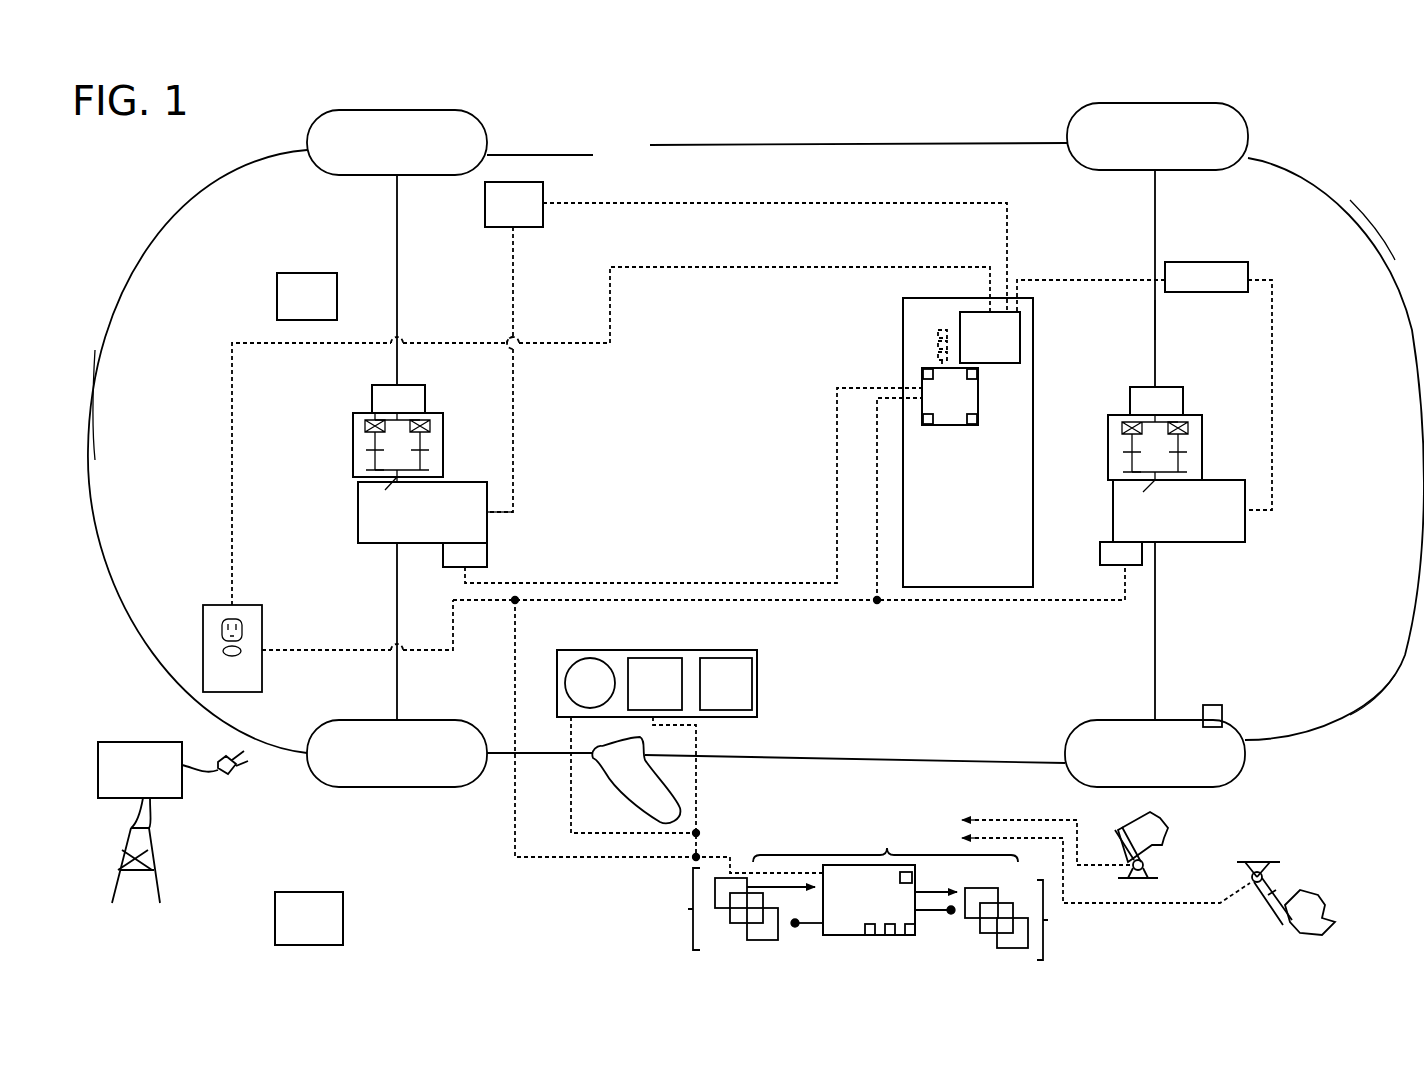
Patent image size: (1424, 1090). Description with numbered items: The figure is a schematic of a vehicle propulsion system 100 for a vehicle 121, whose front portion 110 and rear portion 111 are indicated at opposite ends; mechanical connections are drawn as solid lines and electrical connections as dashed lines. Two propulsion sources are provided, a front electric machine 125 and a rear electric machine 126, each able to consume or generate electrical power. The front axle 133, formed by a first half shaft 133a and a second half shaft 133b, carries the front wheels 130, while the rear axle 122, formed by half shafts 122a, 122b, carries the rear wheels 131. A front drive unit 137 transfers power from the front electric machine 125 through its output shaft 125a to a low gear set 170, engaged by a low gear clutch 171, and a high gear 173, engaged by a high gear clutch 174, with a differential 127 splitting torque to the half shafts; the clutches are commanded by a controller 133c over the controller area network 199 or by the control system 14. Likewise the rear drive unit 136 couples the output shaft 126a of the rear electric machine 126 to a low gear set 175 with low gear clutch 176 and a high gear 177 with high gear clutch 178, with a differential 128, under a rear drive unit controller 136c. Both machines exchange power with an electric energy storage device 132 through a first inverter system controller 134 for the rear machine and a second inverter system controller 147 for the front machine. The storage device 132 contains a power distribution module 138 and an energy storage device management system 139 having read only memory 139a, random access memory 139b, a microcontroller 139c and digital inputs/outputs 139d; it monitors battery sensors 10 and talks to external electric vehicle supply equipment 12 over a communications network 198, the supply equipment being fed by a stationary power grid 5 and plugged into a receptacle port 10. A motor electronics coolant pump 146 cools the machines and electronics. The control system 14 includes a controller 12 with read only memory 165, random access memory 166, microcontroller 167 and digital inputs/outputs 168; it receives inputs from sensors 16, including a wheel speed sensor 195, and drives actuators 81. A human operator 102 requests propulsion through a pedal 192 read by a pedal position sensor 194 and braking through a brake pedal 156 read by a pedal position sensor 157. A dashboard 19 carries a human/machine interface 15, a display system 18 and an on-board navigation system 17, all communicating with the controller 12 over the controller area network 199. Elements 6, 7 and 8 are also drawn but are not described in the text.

The vehicle propulsion system 100 is at (892, 118).
The front portion of vehicle 110 is at (100, 246).
The rear portion of vehicle 111 is at (1385, 190).
The vehicle 121 is at (1365, 742).
The rear axle 122 is at (1183, 247).
The first half shaft 122a is at (1155, 228).
The second half shaft 122b is at (1155, 648).
The front wheels 130 is at (412, 110).
The rear wheels 131 is at (1192, 103).
The front axle 133 is at (365, 578).
The first half shaft 133a is at (397, 285).
The second half shaft 133b is at (397, 608).
The front drive unit controller 133c is at (465, 555).
The first inverter system controller 134 is at (1206, 277).
The rear drive unit 136 is at (1280, 522).
The rear drive unit controller 136c is at (1121, 553).
The front drive unit 137 is at (520, 522).
The power distribution module 138 is at (990, 337).
The electric energy storage device management system 139 is at (950, 396).
The non-transitory memory 139a is at (930, 426).
The random access memory 139b is at (972, 426).
The microcontroller 139c is at (978, 378).
The digital inputs/outputs 139d is at (918, 373).
The motor electronics coolant pump 146 is at (307, 296).
The second inverter system controller 147 is at (514, 204).
The front electric machine 125 is at (422, 512).
The output shaft of front electric machine 125a is at (379, 489).
The rear electric machine 126 is at (1179, 511).
The output shaft of rear electric machine 126a is at (1136, 492).
The differential 127 is at (398, 399).
The differential 128 is at (1156, 401).
The electric energy storage device 132 is at (988, 496).
The receptacle port 10 is at (262, 672).
The communications network 198 is at (322, 650).
The controller area network 199 is at (540, 860).
The dashboard 19 is at (688, 650).
The human/machine interface 15 is at (602, 694).
The display system 18 is at (667, 694).
The on-board navigation system 17 is at (738, 694).
The controller 12 is at (128, 783).
The stationary power grid 5 is at (160, 890).
The external power source 8 is at (315, 929).
The input to controller 6 is at (797, 927).
The output from controller 7 is at (930, 918).
The control system 14 is at (885, 832).
The sensors 16 is at (711, 909).
The actuators 81 is at (1030, 920).
The non-transitory memory 165 is at (868, 937).
The random access memory 166 is at (890, 937).
The microcontroller 167 is at (910, 937).
The digital inputs/outputs 168 is at (914, 876).
The low gear set 170 is at (357, 425).
The low gear clutch 171 is at (362, 453).
The high gear 173 is at (440, 427).
The high gear clutch 174 is at (435, 452).
The low gear set 175 is at (1112, 426).
The low gear clutch 176 is at (1118, 455).
The high gear 177 is at (1200, 430).
The high gear clutch 178 is at (1192, 453).
The pedal 192 is at (1118, 848).
The pedal position sensor 194 is at (1145, 863).
The wheel speed sensor 195 is at (1213, 705).
The human operator 102 is at (1145, 825).
The brake pedal 156 is at (1286, 925).
The pedal position sensor 157 is at (1250, 876).